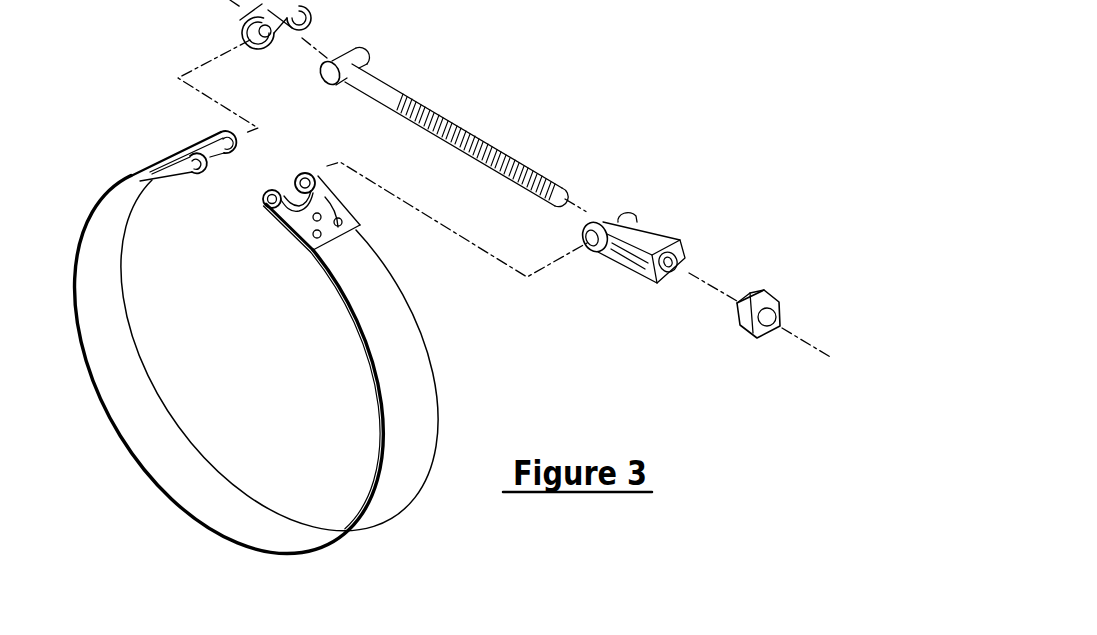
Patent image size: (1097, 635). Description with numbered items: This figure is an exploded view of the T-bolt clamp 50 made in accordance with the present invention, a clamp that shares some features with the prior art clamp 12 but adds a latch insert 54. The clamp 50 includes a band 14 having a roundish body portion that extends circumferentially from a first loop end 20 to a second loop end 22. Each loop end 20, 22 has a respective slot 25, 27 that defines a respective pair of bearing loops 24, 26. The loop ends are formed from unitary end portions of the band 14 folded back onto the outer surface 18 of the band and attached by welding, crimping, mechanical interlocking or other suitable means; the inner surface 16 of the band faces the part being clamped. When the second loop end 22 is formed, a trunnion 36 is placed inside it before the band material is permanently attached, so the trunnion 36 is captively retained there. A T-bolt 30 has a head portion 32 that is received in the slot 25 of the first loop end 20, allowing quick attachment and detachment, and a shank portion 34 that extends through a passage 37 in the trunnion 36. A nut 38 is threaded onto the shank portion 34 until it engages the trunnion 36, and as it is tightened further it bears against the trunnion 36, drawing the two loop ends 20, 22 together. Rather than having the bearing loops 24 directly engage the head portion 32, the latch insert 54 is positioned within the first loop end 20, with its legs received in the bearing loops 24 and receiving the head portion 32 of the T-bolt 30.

The band clamp 12 is at (276, 138).
The band 14 is at (264, 365).
The outer surface of band 16 is at (125, 398).
The outer surface 18 is at (407, 420).
The first loop end 20 is at (160, 178).
The second loop end 22 is at (337, 238).
The bearing loops 24 is at (222, 133).
The slot 25 is at (213, 158).
The bearing loops 26 is at (262, 198).
The slot 27 is at (300, 188).
The T-bolt 30 is at (477, 128).
The head portion 32 is at (350, 53).
The shank portion 34 is at (494, 172).
The trunnion 36 is at (636, 214).
The passage 37 is at (686, 252).
The nut 38 is at (758, 290).
The T-bolt clamp 50 is at (571, 78).
The latch insert 54 is at (240, 18).